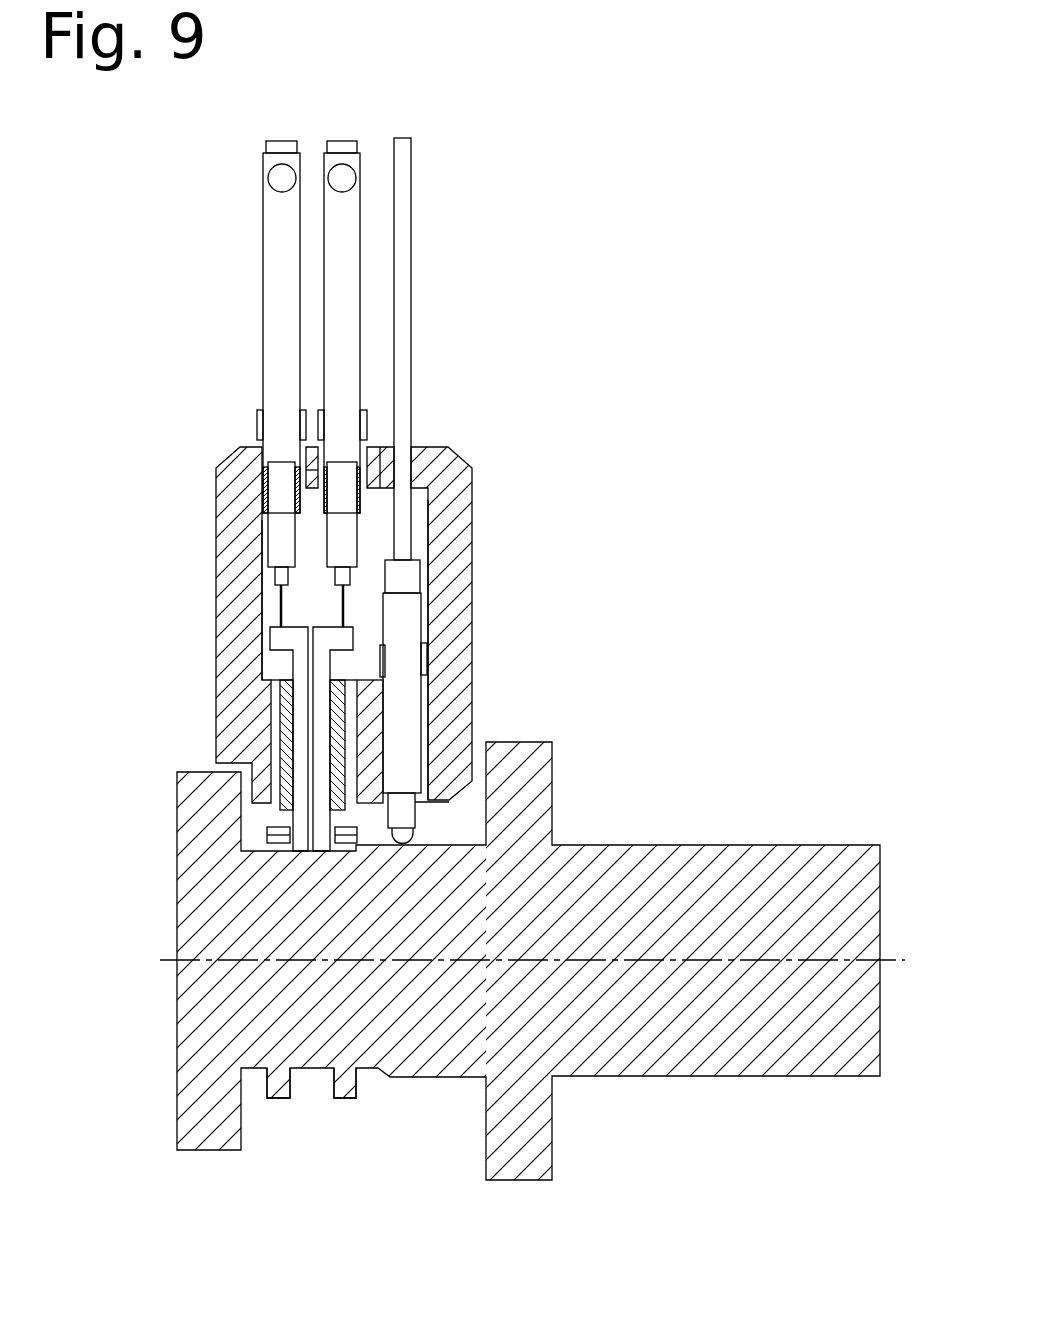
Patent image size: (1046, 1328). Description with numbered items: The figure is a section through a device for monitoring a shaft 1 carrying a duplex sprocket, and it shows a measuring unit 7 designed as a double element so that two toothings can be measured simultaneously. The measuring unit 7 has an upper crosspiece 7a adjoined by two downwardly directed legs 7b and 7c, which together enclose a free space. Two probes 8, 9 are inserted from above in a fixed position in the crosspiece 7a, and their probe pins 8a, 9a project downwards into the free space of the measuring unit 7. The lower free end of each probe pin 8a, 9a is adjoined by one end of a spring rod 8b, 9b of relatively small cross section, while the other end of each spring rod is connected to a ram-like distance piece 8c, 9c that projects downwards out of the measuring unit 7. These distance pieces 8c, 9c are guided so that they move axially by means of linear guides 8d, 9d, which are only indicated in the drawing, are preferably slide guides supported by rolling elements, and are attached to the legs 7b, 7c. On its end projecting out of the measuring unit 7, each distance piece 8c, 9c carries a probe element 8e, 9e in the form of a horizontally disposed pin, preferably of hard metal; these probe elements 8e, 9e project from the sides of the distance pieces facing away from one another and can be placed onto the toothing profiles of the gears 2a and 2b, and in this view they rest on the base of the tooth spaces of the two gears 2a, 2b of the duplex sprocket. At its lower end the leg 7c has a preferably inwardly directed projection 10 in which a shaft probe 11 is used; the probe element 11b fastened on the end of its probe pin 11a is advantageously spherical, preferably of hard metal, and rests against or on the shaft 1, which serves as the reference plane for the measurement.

The shaft 1 is at (532, 991).
The gear 2a is at (307, 1154).
The gear 2b is at (387, 1154).
The measuring unit 7 is at (258, 582).
The upper crosspiece 7a is at (179, 378).
The leg 7b is at (150, 589).
The leg 7c is at (561, 650).
The probe 8 is at (177, 327).
The probe pin 8a is at (167, 513).
The spring rod 8b is at (159, 592).
The distance piece 8c is at (173, 733).
The linear guide 8d is at (165, 741).
The probe element 8e is at (241, 1034).
The probe 9 is at (495, 327).
The probe pin 9a is at (507, 442).
The spring rod 9b is at (516, 501).
The distance piece 9c is at (501, 649).
The linear guide 9d is at (514, 687).
The probe element 9e is at (435, 1034).
The projection 10 is at (534, 741).
The shaft probe 11 is at (542, 465).
The probe pin 11a is at (559, 801).
The probe element 11b is at (540, 1034).